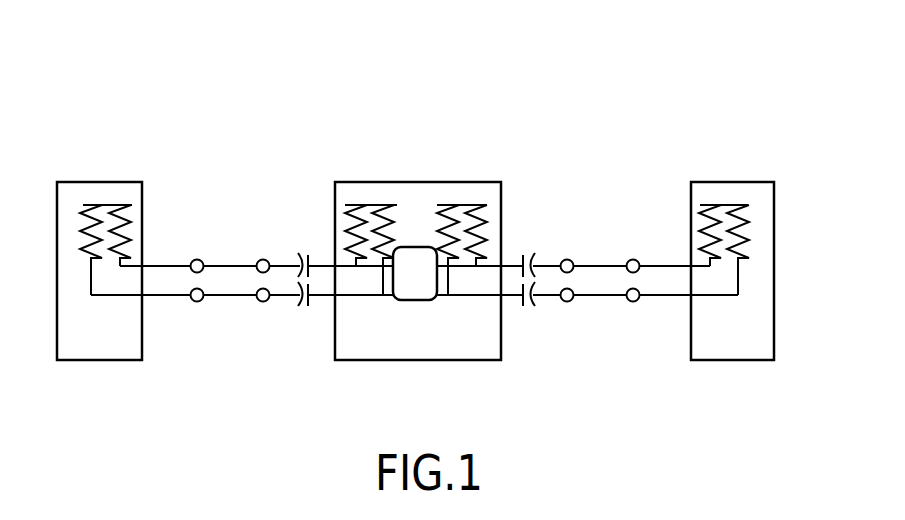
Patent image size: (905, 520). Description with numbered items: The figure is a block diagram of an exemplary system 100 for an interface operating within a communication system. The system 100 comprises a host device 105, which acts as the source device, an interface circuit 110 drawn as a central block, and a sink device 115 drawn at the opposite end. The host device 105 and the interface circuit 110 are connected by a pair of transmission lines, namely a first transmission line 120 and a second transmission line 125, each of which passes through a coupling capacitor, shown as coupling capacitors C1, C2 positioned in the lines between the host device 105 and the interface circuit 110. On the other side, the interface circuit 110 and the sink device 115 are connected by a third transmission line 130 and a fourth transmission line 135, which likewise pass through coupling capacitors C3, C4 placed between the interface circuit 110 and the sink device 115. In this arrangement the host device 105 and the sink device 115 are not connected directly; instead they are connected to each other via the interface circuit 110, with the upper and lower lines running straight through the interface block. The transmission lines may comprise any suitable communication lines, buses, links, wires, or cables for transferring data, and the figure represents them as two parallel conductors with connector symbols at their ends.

The system 100 is at (230, 93).
The host device 105 is at (142, 207).
The interface circuit 110 is at (501, 193).
The sink device 115 is at (774, 210).
The first transmission line 120 is at (190, 262).
The second transmission line 125 is at (177, 300).
The third transmission line 130 is at (555, 262).
The fourth transmission line 135 is at (555, 302).
The coupling capacitor C1 is at (298, 253).
The coupling capacitor C2 is at (299, 306).
The coupling capacitor C3 is at (535, 253).
The coupling capacitor C4 is at (534, 306).